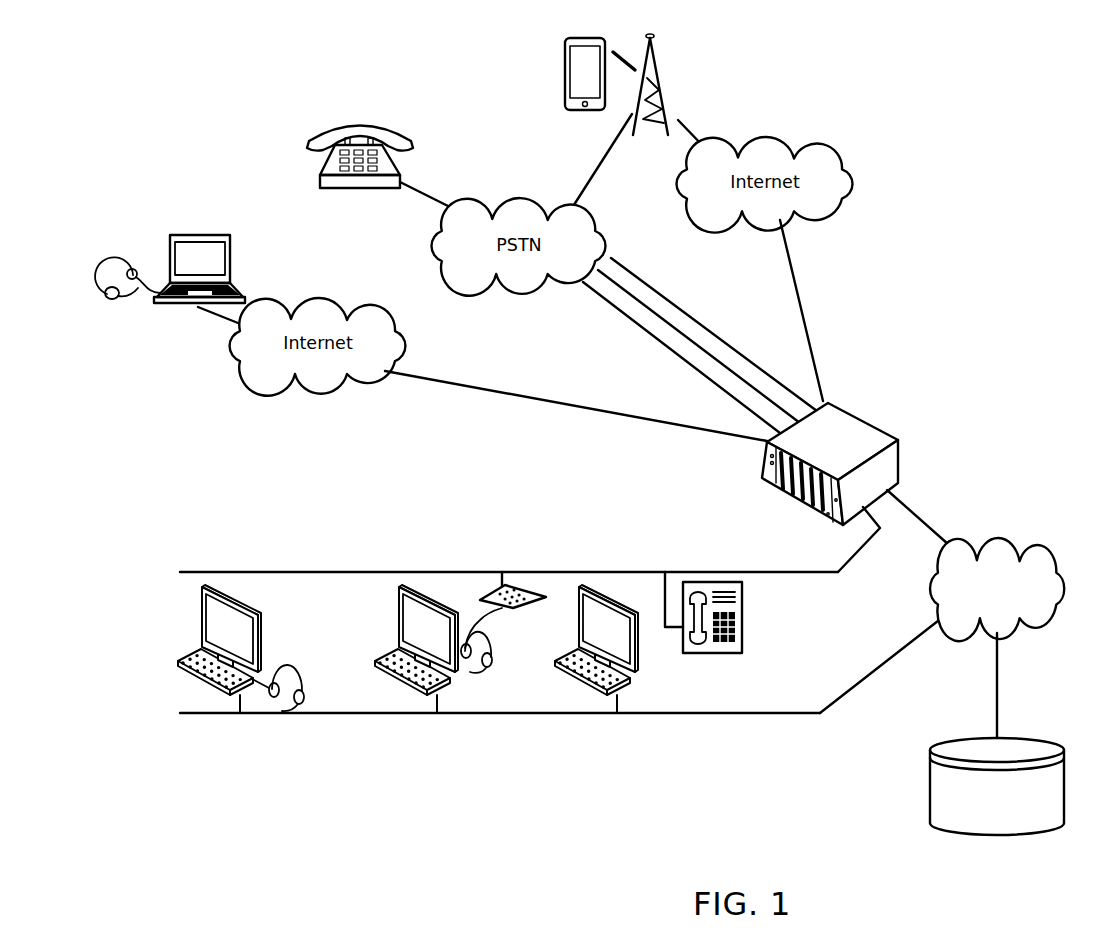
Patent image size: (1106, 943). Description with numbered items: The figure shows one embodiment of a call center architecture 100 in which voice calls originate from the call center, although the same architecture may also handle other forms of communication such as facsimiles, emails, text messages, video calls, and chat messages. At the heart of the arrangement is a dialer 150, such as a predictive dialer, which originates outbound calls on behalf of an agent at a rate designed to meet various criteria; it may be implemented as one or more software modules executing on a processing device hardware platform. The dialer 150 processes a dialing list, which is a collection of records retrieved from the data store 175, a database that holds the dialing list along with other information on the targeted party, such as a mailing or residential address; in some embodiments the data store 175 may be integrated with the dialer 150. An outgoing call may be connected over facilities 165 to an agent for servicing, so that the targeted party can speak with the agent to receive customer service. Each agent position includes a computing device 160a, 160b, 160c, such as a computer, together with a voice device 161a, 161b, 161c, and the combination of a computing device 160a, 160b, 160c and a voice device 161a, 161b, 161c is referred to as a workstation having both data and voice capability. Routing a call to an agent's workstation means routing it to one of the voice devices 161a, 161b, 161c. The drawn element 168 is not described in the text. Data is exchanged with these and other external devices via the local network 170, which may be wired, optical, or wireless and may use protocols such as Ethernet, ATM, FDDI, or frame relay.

The call center architecture 100 is at (1001, 168).
The dialer 150 is at (817, 461).
The computing device 160a is at (287, 607).
The computing device 160b is at (468, 602).
The computing device 160c is at (640, 642).
The voice device 161a is at (327, 669).
The voice device 161b is at (493, 647).
The voice device 161c is at (723, 657).
The facilities 165 is at (778, 572).
The local area network line 168 is at (790, 714).
The local network 170 is at (937, 607).
The data store 175 is at (984, 821).